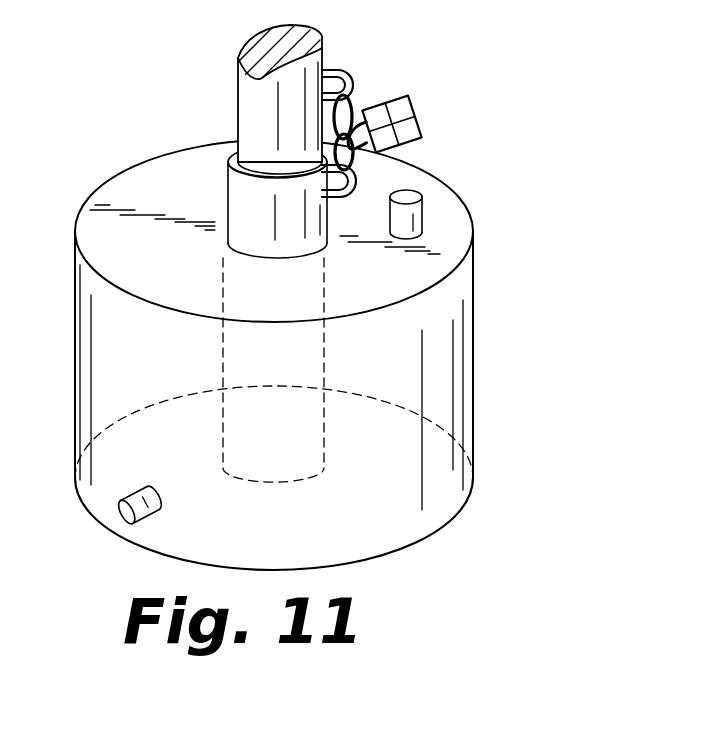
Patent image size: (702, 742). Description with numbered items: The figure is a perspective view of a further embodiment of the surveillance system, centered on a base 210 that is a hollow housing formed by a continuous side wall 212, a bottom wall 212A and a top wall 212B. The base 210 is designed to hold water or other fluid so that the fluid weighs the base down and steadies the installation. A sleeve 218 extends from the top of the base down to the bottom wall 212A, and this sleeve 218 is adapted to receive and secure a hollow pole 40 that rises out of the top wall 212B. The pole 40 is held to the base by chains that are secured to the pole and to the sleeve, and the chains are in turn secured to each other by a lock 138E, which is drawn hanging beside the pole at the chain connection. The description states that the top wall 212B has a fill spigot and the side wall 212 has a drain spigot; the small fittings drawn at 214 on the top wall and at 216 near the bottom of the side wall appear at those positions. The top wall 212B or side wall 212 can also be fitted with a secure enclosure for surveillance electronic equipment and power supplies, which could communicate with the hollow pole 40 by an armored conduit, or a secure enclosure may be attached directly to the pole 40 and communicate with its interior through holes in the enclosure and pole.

The hollow pole 40 is at (238, 105).
The lock 138E is at (416, 114).
The base 210 is at (316, 289).
The side wall 212 is at (316, 355).
The bottom wall 212A is at (474, 468).
The top wall 212B is at (462, 222).
The vent 214 is at (410, 193).
The outlet spout 216 is at (119, 519).
The sleeve 218 is at (228, 200).